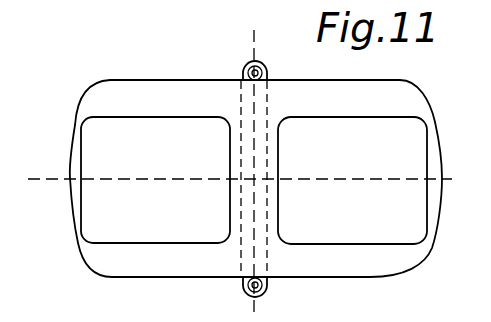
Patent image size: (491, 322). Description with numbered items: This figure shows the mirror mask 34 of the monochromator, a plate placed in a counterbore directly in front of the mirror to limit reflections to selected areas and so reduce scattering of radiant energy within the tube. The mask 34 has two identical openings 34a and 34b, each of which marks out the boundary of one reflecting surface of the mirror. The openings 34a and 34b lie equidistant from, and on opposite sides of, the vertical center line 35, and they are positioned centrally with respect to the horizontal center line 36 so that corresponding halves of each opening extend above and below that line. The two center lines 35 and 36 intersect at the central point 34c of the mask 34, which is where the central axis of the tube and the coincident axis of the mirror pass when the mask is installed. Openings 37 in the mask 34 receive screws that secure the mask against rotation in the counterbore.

The mirror mask 34 is at (403, 265).
The opening 34a is at (395, 128).
The opening 34b is at (125, 164).
The central point 34c is at (255, 179).
The vertical center line 35 is at (272, 321).
The horizontal center line 36 is at (182, 180).
The openings 37 is at (265, 70).